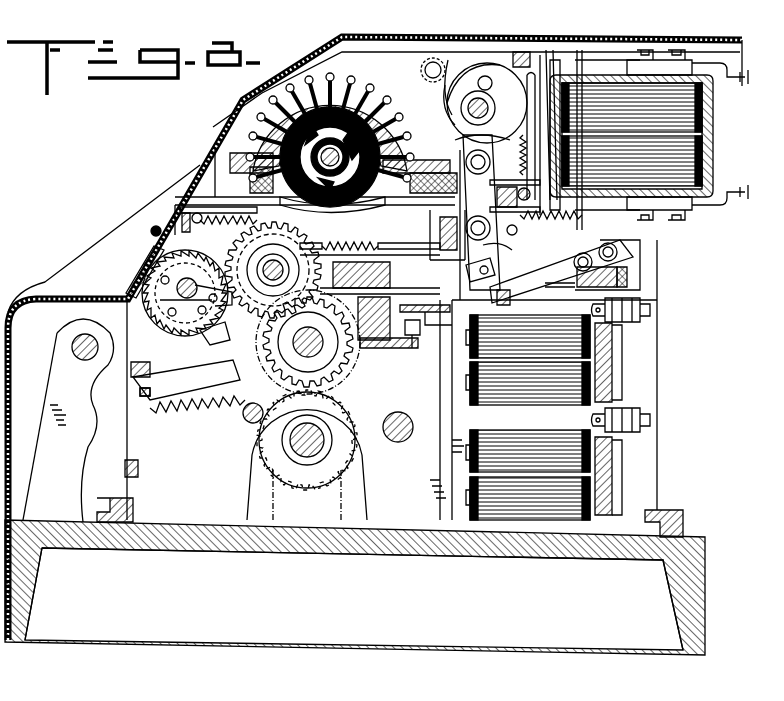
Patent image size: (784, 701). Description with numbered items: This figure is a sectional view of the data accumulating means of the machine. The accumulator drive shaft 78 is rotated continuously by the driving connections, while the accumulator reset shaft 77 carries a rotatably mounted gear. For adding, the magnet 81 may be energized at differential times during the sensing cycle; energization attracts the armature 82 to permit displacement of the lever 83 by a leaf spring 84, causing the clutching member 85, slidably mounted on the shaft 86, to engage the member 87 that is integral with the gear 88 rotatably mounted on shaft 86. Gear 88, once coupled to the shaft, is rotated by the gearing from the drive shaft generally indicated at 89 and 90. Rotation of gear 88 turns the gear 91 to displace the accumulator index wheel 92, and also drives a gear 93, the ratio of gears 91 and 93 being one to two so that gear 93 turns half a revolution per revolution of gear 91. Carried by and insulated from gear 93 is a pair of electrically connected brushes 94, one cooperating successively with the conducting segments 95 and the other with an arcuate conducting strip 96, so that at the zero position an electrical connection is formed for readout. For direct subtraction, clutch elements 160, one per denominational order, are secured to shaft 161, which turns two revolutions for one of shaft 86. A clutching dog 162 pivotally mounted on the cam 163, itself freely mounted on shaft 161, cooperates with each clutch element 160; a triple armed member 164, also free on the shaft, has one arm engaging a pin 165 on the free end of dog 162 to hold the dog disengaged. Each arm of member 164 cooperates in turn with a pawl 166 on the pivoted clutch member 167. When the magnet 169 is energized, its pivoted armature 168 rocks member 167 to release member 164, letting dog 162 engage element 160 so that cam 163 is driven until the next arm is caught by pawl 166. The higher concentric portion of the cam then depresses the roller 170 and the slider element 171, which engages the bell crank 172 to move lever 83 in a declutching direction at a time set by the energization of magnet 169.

The accumulator reset shaft 77 is at (72, 346).
The accumulator drive shaft 78 is at (324, 450).
The magnet 81 is at (550, 447).
The armature 82 is at (460, 372).
The lever 83 is at (386, 275).
The leaf spring 84 is at (565, 273).
The clutching member 85 is at (262, 250).
The shaft 86 is at (272, 283).
The member 87 is at (282, 268).
The gear 88 is at (384, 257).
The gearing 89 is at (290, 376).
The gearing 90 is at (335, 391).
The gear 91 is at (141, 272).
The accumulator index wheel 92 is at (172, 322).
The gear 93 is at (230, 205).
The brushes 94 is at (330, 157).
The conducting segments 95 is at (366, 90).
The arcuate conducting strip 96 is at (337, 195).
The clutch elements 160 is at (482, 72).
The shaft 161 is at (531, 95).
The clutching dog 162 is at (482, 62).
The cam 163 is at (490, 160).
The triple armed member 164 is at (450, 117).
The pin 165 is at (448, 60).
The pawl 166 is at (548, 110).
The pivoted clutch member 167 is at (528, 221).
The pivoted armature 168 is at (584, 166).
The magnet 169 is at (644, 135).
The roller 170 is at (492, 186).
The slider element 171 is at (510, 234).
The bell crank 172 is at (490, 262).